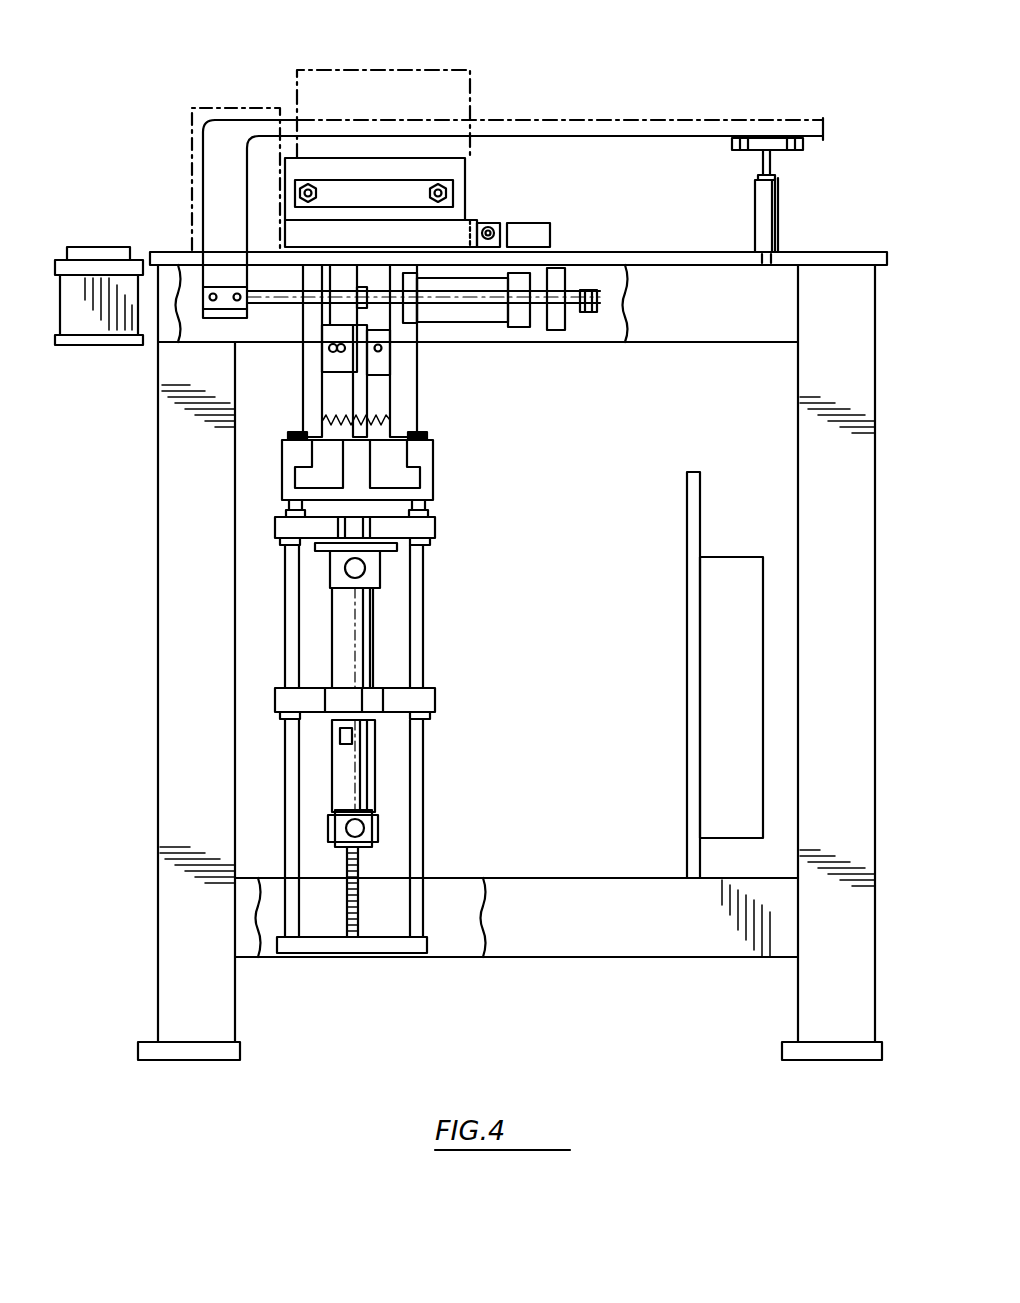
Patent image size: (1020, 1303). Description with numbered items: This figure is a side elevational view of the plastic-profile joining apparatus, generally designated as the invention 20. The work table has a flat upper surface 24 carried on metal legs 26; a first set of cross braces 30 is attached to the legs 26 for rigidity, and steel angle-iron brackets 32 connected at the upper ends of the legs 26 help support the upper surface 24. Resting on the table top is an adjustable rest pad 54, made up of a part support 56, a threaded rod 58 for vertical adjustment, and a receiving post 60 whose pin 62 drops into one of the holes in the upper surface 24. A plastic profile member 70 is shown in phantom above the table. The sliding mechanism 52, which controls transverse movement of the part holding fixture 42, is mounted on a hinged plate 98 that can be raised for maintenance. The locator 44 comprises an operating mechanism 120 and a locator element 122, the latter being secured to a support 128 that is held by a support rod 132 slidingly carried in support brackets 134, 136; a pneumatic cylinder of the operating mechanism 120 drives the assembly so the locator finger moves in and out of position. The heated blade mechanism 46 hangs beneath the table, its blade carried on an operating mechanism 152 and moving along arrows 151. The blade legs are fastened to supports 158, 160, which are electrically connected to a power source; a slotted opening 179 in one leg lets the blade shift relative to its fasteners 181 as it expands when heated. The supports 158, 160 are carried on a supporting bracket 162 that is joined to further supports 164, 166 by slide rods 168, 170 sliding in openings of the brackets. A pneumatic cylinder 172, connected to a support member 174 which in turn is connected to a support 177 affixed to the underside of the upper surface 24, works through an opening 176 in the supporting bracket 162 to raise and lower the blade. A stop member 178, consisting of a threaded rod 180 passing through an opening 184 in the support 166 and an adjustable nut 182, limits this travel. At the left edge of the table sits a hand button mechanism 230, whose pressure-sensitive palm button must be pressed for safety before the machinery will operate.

The invention 20 is at (112, 460).
The upper surface 24 is at (850, 253).
The legs 26 is at (865, 523).
The cross braces 30 is at (598, 882).
The brackets 32 is at (721, 335).
The part holding fixture 42 is at (348, 69).
The locator 44 is at (212, 167).
The heated blade mechanism 46 is at (425, 568).
The sliding mechanism 52 is at (470, 168).
The adjustable rest pad 54 is at (780, 183).
The part support 56 is at (743, 137).
The threaded rod 58 is at (761, 157).
The receiving post 60 is at (777, 208).
The pin 62 is at (768, 266).
The plastic profile member 70 is at (593, 118).
The hinged plate 98 is at (543, 231).
The operating mechanism 120 is at (500, 323).
The locator element 122 is at (213, 140).
The support 128 is at (210, 322).
The support rod 132 is at (433, 322).
The support bracket 134 is at (330, 330).
The support bracket 136 is at (598, 310).
The arrows 151 is at (237, 347).
The operating mechanism 152 is at (327, 624).
The support 158 is at (325, 388).
The support 160 is at (387, 385).
The supporting bracket 162 is at (437, 522).
The support 164 is at (430, 693).
The support 166 is at (423, 953).
The slide rod 168 is at (283, 740).
The slide rod 170 is at (423, 766).
The pneumatic cylinder 172 is at (365, 626).
The support member 174 is at (287, 477).
The opening 176 is at (277, 525).
The support 177 is at (405, 408).
The stop member 178 is at (363, 790).
The slotted opening 179 is at (336, 355).
The threaded rod 180 is at (358, 895).
The fasteners 181 is at (383, 350).
The adjustable nut 182 is at (368, 740).
The opening 184 is at (336, 938).
The hand button mechanism 230 is at (78, 280).